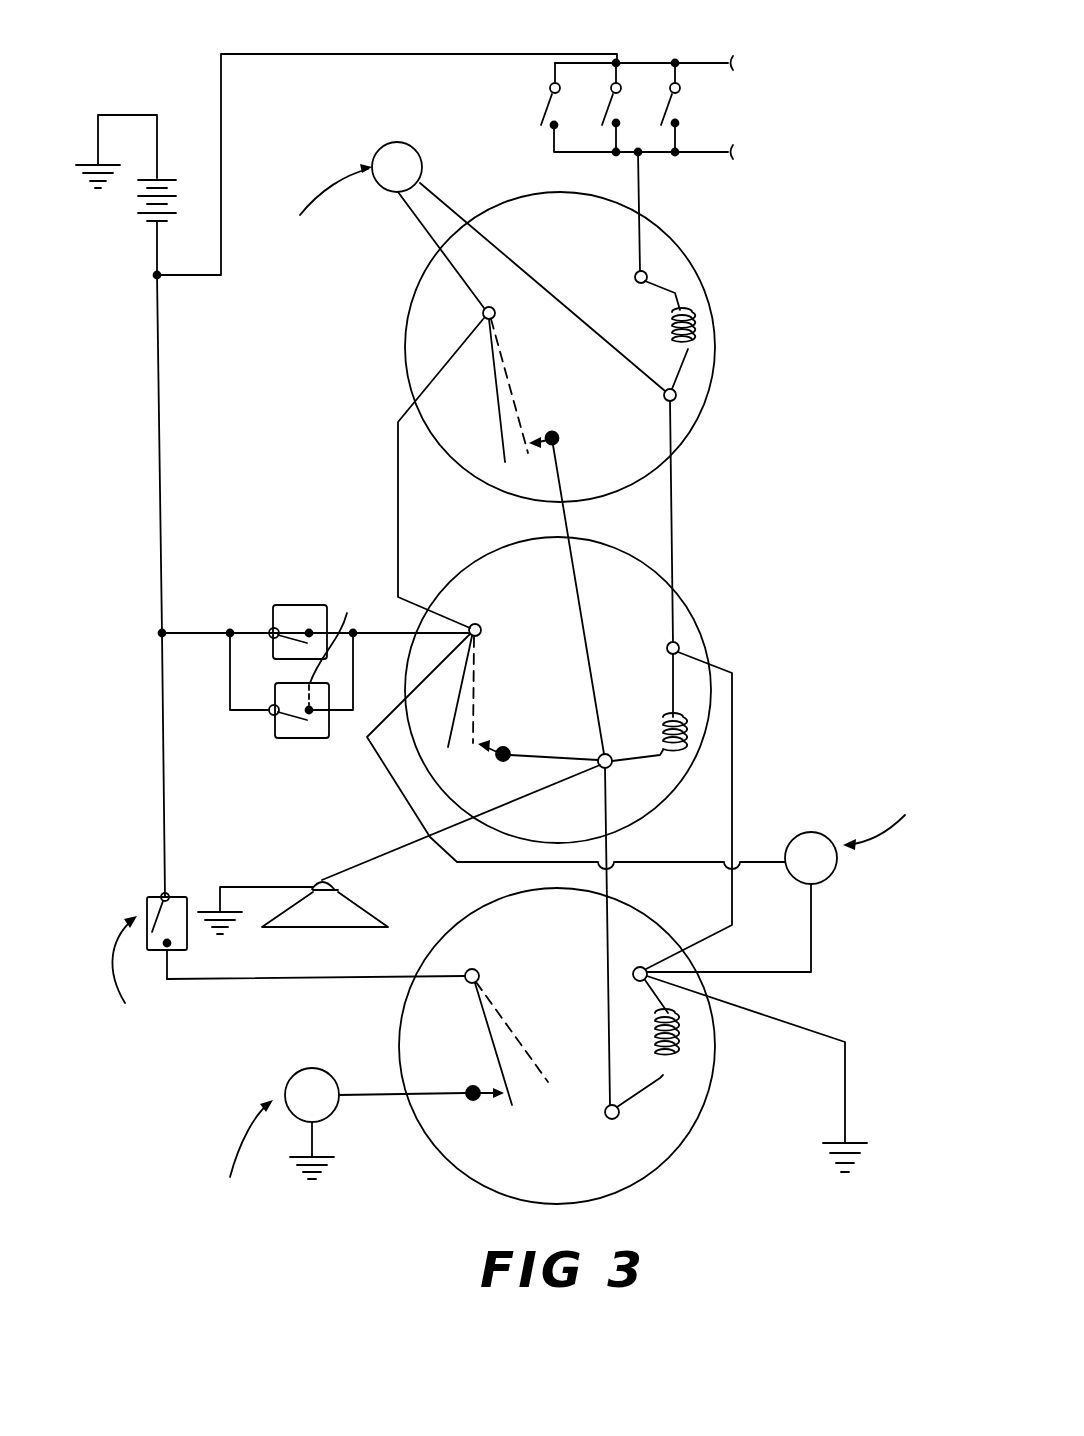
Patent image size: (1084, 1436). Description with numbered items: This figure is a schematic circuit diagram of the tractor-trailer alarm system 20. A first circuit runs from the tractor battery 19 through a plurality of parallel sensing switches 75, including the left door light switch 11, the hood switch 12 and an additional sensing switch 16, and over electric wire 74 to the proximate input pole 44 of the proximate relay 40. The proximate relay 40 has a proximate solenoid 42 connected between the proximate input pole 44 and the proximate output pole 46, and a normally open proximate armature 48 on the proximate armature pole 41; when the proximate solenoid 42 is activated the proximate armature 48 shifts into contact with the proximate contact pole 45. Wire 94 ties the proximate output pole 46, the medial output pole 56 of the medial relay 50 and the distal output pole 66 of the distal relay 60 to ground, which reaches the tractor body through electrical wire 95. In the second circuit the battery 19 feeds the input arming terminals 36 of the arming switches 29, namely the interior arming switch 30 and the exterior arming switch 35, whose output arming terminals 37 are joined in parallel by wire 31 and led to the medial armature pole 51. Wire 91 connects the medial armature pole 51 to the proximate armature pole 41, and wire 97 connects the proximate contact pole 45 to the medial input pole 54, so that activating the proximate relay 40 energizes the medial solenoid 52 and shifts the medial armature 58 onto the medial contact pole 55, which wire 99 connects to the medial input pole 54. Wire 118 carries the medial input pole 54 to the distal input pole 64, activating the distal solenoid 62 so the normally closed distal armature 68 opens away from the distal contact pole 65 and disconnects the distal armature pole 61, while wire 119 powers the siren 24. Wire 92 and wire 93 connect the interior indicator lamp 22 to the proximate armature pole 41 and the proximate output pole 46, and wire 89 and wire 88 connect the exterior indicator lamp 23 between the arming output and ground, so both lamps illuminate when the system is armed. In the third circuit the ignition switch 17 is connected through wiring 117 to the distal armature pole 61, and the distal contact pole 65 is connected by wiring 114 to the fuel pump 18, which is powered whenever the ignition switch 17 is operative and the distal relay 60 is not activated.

The left door light switch 11 is at (556, 127).
The hood switch 12 is at (677, 125).
The switch 16 is at (618, 125).
The ignition switch 17 is at (180, 893).
The fuel pump 18 is at (338, 1113).
The tractor battery 19 is at (178, 207).
The tractor-trailer alarm system 20 is at (788, 384).
The interior indicator lamp 22 is at (395, 137).
The exterior indicator lamp 23 is at (838, 872).
The siren 24 is at (303, 930).
The arming switches 29 is at (225, 666).
The interior arming switch 30 is at (307, 605).
The electrical wire 31 is at (395, 640).
The exterior arming switch 35 is at (312, 740).
The input arming terminal 36 is at (272, 705).
The output arming terminal 37 is at (312, 633).
The proximate relay 40 is at (705, 405).
The proximate armature pole 41 is at (495, 313).
The proximate solenoid 42 is at (668, 335).
The proximate input pole 44 is at (635, 273).
The proximate contact pole 45 is at (553, 432).
The proximate output pole 46 is at (667, 405).
The proximate armature 48 is at (500, 409).
The medial relay 50 is at (693, 602).
The medial armature pole 51 is at (495, 624).
The medial solenoid 52 is at (660, 719).
The medial input pole 54 is at (612, 766).
The medial contact pole 55 is at (504, 745).
The medial output pole 56 is at (668, 642).
The medial armature 58 is at (450, 740).
The distal relay 60 is at (700, 1120).
The distal armature pole 61 is at (480, 975).
The distal solenoid 62 is at (658, 1042).
The distal input pole 64 is at (612, 1120).
The distal contact pole 65 is at (474, 1101).
The distal output pole 66 is at (647, 968).
The distal armature 68 is at (489, 1036).
The electric wire 74 is at (642, 192).
The sensing switches 75 is at (668, 48).
The wire 88 is at (815, 955).
The wire 89 is at (397, 788).
The wire 91 is at (398, 500).
The wire 92 is at (430, 240).
The wire 93 is at (470, 215).
The wire 94 is at (673, 520).
The electrical wire 95 is at (845, 1077).
The wire 97 is at (555, 520).
The wire 99 is at (565, 757).
The electrical wiring 114 is at (370, 1089).
The wiring 117 is at (320, 987).
The electrical wire 118 is at (612, 880).
The electrical wire 119 is at (370, 863).